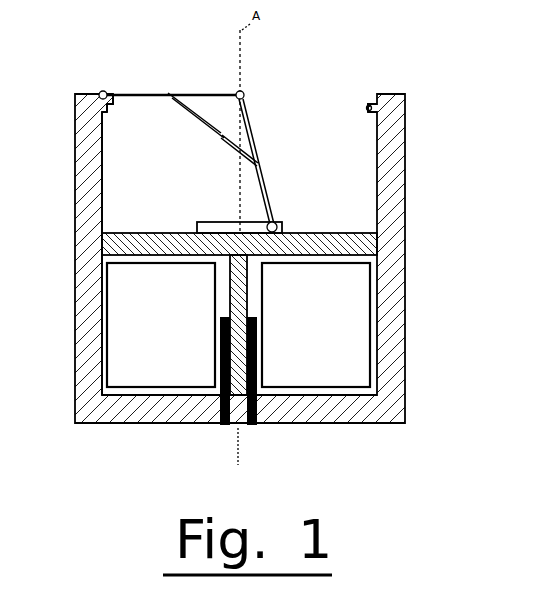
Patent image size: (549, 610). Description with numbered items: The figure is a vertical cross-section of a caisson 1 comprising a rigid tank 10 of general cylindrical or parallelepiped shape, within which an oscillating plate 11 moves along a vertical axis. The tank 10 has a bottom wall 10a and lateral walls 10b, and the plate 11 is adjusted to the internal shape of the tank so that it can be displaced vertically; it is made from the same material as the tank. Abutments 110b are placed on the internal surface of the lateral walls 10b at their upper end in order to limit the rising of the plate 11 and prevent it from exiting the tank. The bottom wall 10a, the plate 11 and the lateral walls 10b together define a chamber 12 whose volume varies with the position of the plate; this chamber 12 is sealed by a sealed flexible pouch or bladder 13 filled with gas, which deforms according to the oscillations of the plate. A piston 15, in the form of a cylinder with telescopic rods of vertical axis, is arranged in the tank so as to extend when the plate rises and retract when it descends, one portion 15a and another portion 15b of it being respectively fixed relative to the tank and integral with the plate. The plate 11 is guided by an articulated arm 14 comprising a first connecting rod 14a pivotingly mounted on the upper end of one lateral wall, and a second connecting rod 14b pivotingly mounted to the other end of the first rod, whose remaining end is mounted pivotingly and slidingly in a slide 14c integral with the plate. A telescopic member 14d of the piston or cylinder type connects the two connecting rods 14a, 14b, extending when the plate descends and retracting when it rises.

The caisson 1 is at (462, 64).
The rigid tank 10 is at (396, 350).
The bottom wall 10a is at (312, 410).
The lateral walls 10b is at (84, 170).
The oscillating plate 11 is at (100, 220).
The chamber 12 is at (380, 258).
The sealed flexible pouch 13 is at (106, 322).
The articulated arm 14 is at (200, 131).
The first connecting rod 14a is at (134, 94).
The second connecting rod 14b is at (268, 188).
The slide 14c is at (230, 222).
The member of the piston or cylinder type 14d is at (205, 125).
The piston 15 is at (224, 418).
The portion of the piston 15a is at (256, 421).
The portion of the piston 15b is at (244, 425).
The abutments 110b is at (109, 112).